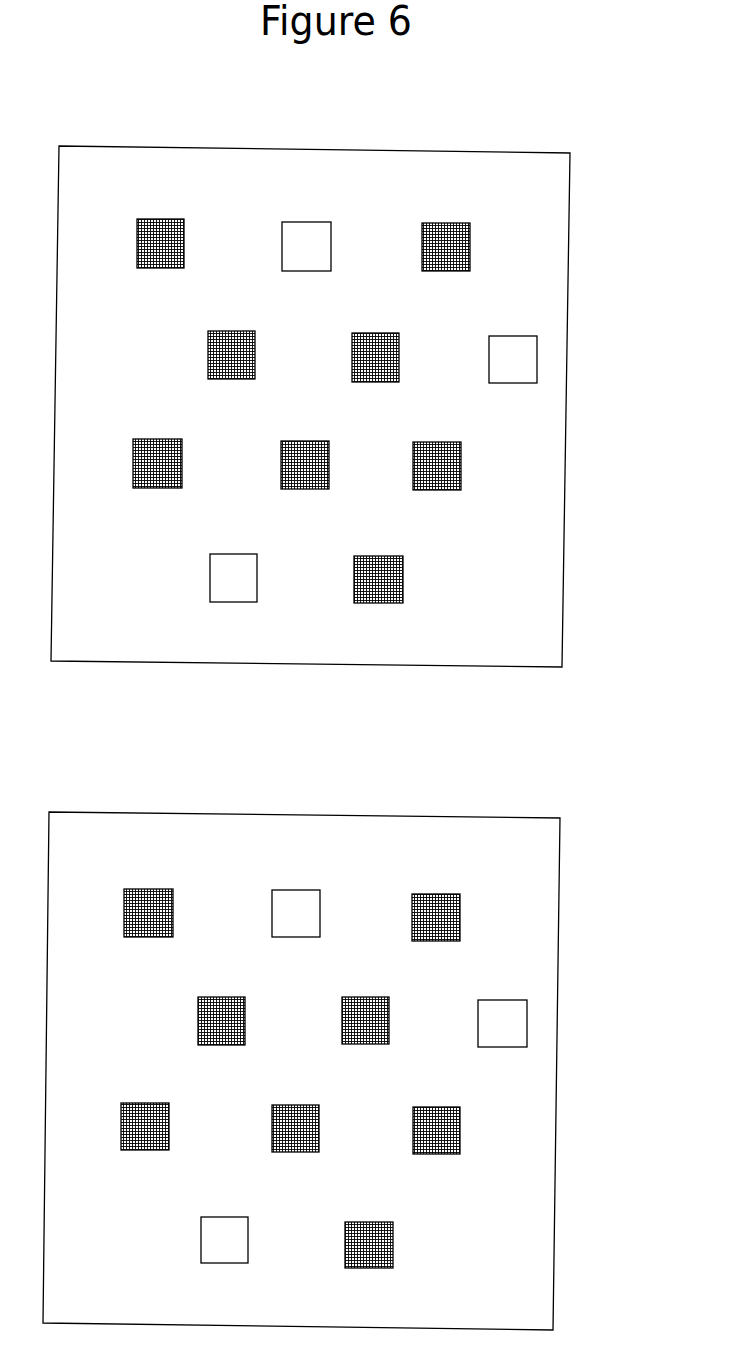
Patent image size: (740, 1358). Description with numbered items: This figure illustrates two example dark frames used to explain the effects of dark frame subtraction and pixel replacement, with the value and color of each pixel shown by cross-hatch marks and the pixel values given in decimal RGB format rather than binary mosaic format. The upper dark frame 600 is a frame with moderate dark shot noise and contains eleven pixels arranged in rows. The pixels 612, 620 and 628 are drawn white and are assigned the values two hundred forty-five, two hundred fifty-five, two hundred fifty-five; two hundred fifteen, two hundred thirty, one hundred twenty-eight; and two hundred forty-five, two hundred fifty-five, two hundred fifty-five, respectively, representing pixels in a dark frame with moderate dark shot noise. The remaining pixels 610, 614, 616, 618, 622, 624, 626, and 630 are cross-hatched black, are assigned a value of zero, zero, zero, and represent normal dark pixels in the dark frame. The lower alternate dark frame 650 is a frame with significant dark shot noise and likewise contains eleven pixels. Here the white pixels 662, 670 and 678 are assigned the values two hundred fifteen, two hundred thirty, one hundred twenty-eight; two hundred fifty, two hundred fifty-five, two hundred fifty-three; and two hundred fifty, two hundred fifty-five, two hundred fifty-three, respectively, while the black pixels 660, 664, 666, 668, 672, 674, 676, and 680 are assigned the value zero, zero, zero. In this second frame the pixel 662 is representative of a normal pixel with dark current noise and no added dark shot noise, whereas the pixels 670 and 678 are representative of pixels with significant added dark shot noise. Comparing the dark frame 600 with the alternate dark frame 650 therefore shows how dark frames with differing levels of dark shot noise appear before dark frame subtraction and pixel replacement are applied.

The dark frame 600 is at (563, 124).
The pixel 610 is at (160, 219).
The pixel 612 is at (306, 222).
The pixel 614 is at (445, 223).
The pixel 616 is at (230, 331).
The pixel 618 is at (374, 333).
The pixel 620 is at (512, 336).
The pixel 622 is at (156, 439).
The pixel 624 is at (304, 441).
The pixel 626 is at (436, 442).
The pixel 628 is at (232, 554).
The pixel 630 is at (378, 556).
The alternate dark frame 650 is at (553, 792).
The pixel 660 is at (148, 889).
The pixel 662 is at (295, 890).
The pixel 664 is at (435, 894).
The pixel 666 is at (220, 997).
The pixel 668 is at (364, 997).
The pixel 670 is at (502, 1000).
The pixel 672 is at (144, 1103).
The pixel 674 is at (296, 1105).
The pixel 676 is at (436, 1107).
The pixel 678 is at (224, 1217).
The pixel 680 is at (369, 1222).